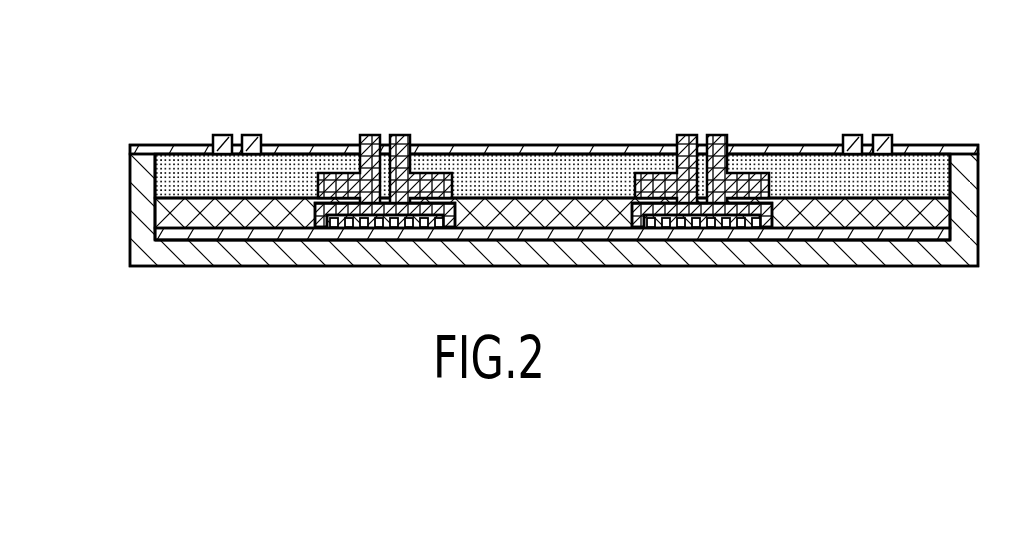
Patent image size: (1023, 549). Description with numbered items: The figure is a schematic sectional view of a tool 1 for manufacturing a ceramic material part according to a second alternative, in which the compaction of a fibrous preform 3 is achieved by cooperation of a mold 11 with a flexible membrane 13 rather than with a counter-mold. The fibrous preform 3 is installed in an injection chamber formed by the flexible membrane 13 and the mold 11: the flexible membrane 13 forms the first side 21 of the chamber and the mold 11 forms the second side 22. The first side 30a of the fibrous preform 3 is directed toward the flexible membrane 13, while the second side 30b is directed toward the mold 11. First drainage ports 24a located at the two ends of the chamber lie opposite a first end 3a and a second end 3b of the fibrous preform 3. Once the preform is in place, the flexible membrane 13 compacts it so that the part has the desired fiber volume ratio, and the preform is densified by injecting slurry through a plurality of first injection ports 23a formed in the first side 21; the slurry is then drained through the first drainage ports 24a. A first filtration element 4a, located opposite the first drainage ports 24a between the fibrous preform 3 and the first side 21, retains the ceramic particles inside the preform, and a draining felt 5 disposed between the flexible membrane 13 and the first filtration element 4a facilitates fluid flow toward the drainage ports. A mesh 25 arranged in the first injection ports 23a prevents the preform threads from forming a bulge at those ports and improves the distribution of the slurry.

The tool 1 is at (933, 93).
The fibrous preform 3 is at (593, 242).
The first end of the fibrous preform 3a is at (913, 238).
The second end of the fibrous preform 3b is at (162, 242).
The first filtration element 4a is at (262, 232).
The draining felt 5 is at (583, 183).
The mold 11 is at (442, 236).
The flexible membrane 13 is at (545, 150).
The first side of the injection chamber 21 is at (172, 160).
The second side of the injection chamber 22 is at (200, 232).
The first injection ports 23a is at (383, 133).
The first drainage ports 24a is at (237, 133).
The mesh 25 is at (338, 226).
The first side of the fibrous preform 30a is at (473, 197).
The second side of the fibrous preform 30b is at (500, 238).